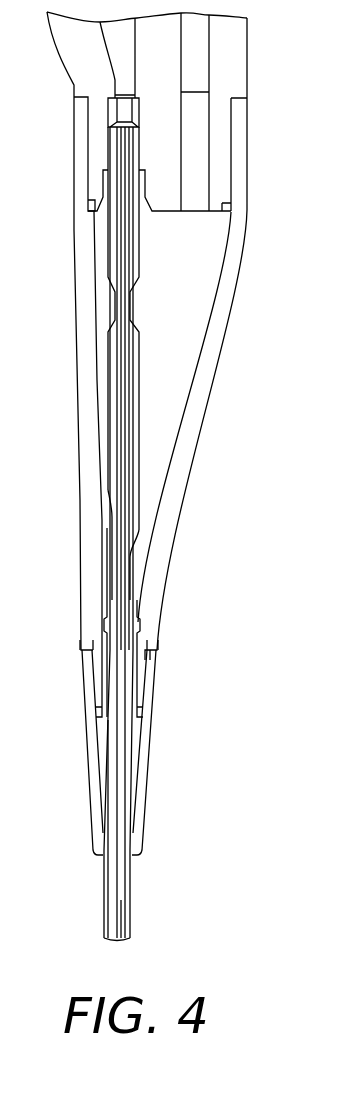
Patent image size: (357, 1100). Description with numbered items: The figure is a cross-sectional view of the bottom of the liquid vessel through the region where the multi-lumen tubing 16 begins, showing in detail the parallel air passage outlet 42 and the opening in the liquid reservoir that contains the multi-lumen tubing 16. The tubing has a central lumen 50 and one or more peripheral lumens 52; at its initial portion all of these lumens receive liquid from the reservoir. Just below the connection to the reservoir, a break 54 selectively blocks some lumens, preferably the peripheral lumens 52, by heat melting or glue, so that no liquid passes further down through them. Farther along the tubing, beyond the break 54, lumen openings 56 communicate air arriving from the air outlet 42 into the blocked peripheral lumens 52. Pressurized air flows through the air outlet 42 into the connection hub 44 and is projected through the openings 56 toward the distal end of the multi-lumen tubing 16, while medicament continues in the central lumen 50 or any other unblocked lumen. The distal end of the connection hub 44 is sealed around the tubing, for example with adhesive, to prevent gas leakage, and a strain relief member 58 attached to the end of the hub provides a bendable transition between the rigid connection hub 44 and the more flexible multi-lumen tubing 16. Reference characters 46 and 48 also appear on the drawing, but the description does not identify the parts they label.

The multi-lumen tubing 16 is at (133, 433).
The air passage outlet 42 is at (193, 213).
The connection hub 44 is at (78, 322).
The connector block 46 is at (232, 138).
The fitting nut 48 is at (117, 125).
The central lumen 50 is at (115, 925).
The peripheral lumens 52 is at (122, 920).
The break 54 is at (132, 321).
The lumen openings 56 is at (128, 567).
The strain relief member 58 is at (145, 822).